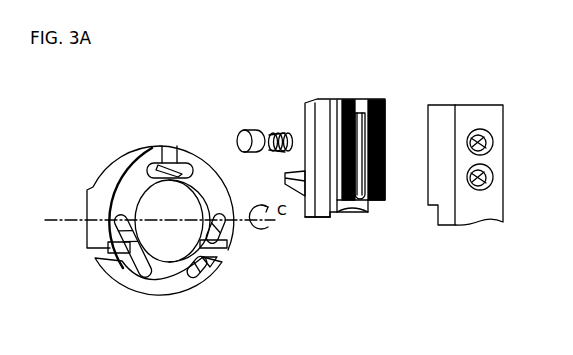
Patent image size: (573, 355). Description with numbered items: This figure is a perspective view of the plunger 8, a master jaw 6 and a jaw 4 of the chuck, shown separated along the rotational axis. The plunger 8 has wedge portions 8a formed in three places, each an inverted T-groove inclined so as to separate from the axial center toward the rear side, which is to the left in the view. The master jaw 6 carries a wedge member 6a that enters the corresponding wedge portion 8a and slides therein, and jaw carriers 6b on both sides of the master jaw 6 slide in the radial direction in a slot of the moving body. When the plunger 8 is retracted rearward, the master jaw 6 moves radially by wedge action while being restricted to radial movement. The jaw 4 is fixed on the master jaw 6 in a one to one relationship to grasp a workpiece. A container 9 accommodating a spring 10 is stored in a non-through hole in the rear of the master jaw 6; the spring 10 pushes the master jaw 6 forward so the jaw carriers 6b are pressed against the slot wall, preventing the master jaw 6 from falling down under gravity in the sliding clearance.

The jaw 4 is at (503, 105).
The master jaw 6 is at (347, 100).
The wedge member 6a is at (284, 180).
The jaw carrier 6b is at (325, 219).
The plunger 8 is at (117, 150).
The wedge portion 8a is at (172, 150).
The container 9 is at (245, 131).
The spring 10 is at (285, 133).